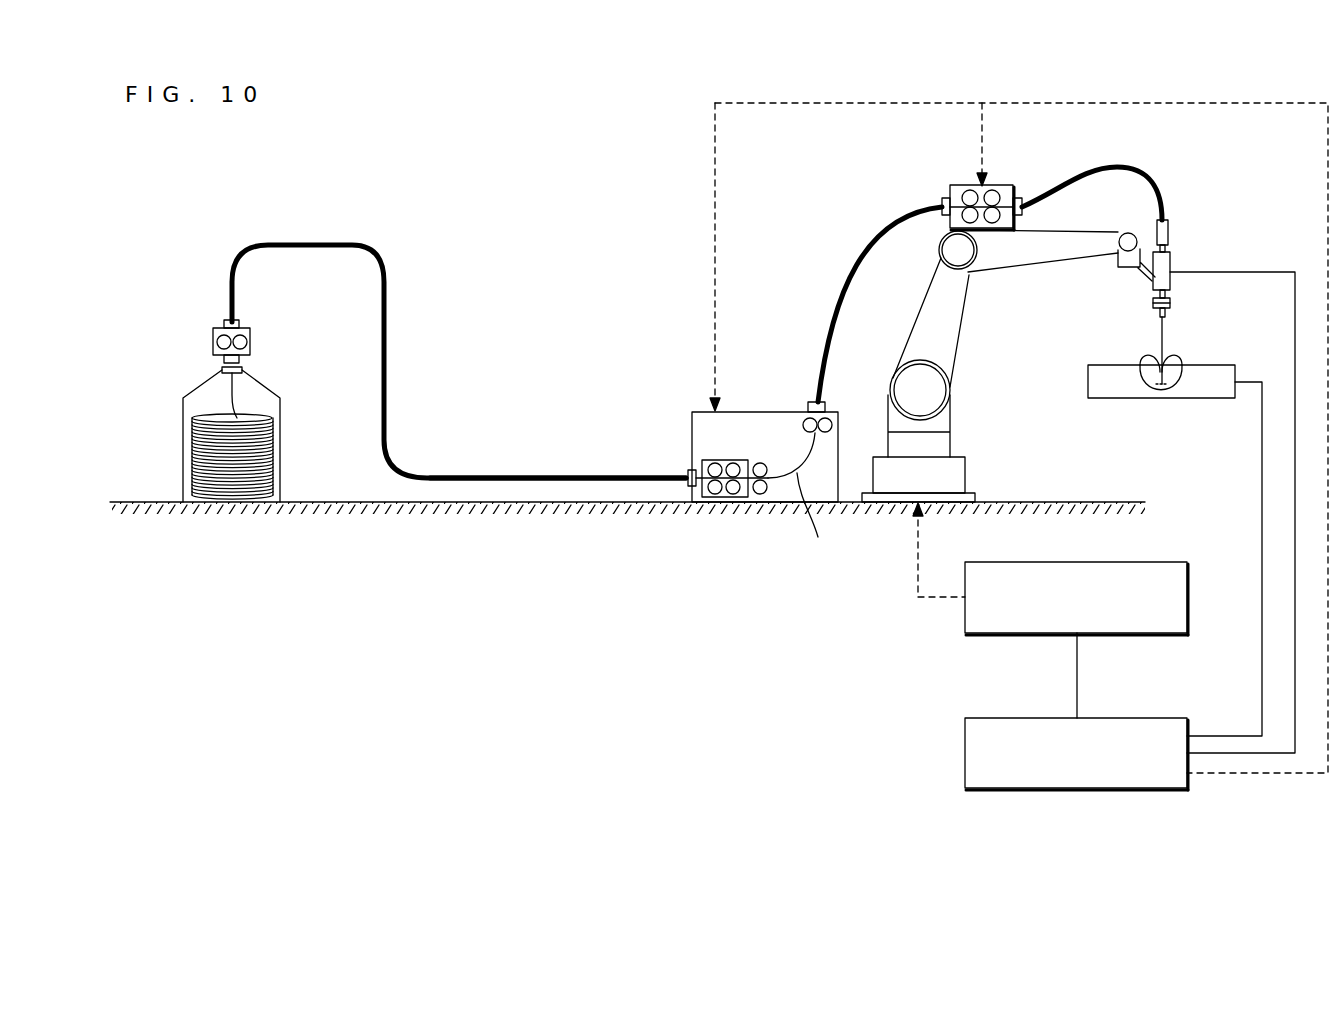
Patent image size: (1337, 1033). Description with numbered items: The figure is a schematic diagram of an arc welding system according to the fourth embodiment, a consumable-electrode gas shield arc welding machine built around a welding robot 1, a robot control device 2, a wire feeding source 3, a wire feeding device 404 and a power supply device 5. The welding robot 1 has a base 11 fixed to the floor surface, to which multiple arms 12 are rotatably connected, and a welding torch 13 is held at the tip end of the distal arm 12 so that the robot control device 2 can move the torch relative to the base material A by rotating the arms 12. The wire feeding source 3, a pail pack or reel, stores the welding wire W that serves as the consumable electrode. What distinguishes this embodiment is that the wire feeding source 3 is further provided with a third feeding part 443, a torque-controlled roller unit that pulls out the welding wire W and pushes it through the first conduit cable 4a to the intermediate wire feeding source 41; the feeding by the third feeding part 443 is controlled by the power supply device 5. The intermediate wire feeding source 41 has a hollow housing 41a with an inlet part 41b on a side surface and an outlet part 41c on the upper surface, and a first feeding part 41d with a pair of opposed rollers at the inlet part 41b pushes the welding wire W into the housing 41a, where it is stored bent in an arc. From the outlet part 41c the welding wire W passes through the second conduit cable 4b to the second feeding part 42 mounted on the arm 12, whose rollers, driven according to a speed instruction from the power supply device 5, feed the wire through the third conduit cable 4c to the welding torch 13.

The wire feeding device 404 is at (283, 206).
The third feeding part 443 is at (213, 342).
The wire feeding source 3 is at (268, 396).
The welding wire W is at (228, 397).
The first conduit cable 4a is at (452, 477).
The second conduit cable 4b is at (831, 308).
The third conduit cable 4c is at (1127, 168).
The intermediate wire feeding source 41 is at (740, 465).
The housing 41a is at (690, 450).
The inlet part 41b is at (688, 475).
The outlet part 41c is at (824, 404).
The first feeding part 41d is at (723, 497).
The second feeding part 42 is at (1003, 185).
The welding robot 1 is at (1007, 347).
The base 11 is at (975, 493).
The arm 12 is at (962, 323).
The welding torch 13 is at (1170, 253).
The base material A is at (1210, 363).
The robot control device 2 is at (1173, 562).
The power supply device 5 is at (1173, 718).